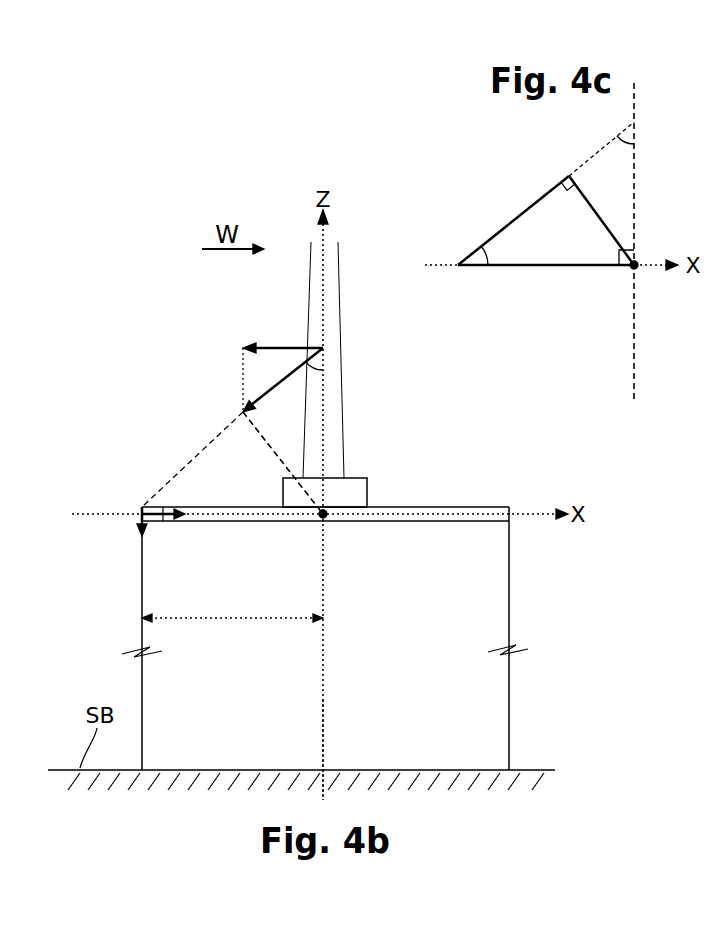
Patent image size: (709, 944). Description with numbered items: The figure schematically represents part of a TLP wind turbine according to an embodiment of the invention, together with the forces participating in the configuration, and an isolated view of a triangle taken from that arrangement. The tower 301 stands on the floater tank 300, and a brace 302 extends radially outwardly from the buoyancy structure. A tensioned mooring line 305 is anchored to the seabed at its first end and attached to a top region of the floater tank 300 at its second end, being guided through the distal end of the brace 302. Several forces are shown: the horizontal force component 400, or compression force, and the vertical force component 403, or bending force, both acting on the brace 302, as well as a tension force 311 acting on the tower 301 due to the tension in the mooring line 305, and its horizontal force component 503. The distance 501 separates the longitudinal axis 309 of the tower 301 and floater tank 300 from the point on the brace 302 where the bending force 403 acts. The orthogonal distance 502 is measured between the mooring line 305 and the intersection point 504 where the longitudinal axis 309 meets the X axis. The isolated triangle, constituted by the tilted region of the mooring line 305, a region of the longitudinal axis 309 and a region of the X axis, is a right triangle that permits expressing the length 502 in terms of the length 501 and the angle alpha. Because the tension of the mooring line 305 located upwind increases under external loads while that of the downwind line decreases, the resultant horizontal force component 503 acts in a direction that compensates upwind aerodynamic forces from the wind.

In FIG. 4b, the floater tank 300 is at (358, 490).
In FIG. 4b, the tower 301 is at (335, 430).
In FIG. 4b, the brace 302 is at (233, 522).
In FIG. 4b, the tensioned mooring line 305 is at (217, 438).
In FIG. 4c, the tensioned mooring line 305 is at (575, 171).
In FIG. 4b, the longitudinal axis 309 is at (323, 738).
In FIG. 4c, the longitudinal axis 309 is at (636, 378).
In FIG. 4b, the tension force 311 is at (280, 383).
In FIG. 4b, the horizontal force component 400 is at (165, 522).
In FIG. 4b, the vertical force component 403 is at (140, 520).
In FIG. 4b, the distance 501 is at (237, 620).
In FIG. 4c, the distance 501 is at (555, 270).
In FIG. 4b, the orthogonal distance 502 is at (260, 457).
In FIG. 4c, the orthogonal distance 502 is at (602, 218).
In FIG. 4b, the horizontal force component 503 is at (288, 345).
In FIG. 4b, the intersection point 504 is at (325, 518).
In FIG. 4c, the intersection point 504 is at (640, 270).